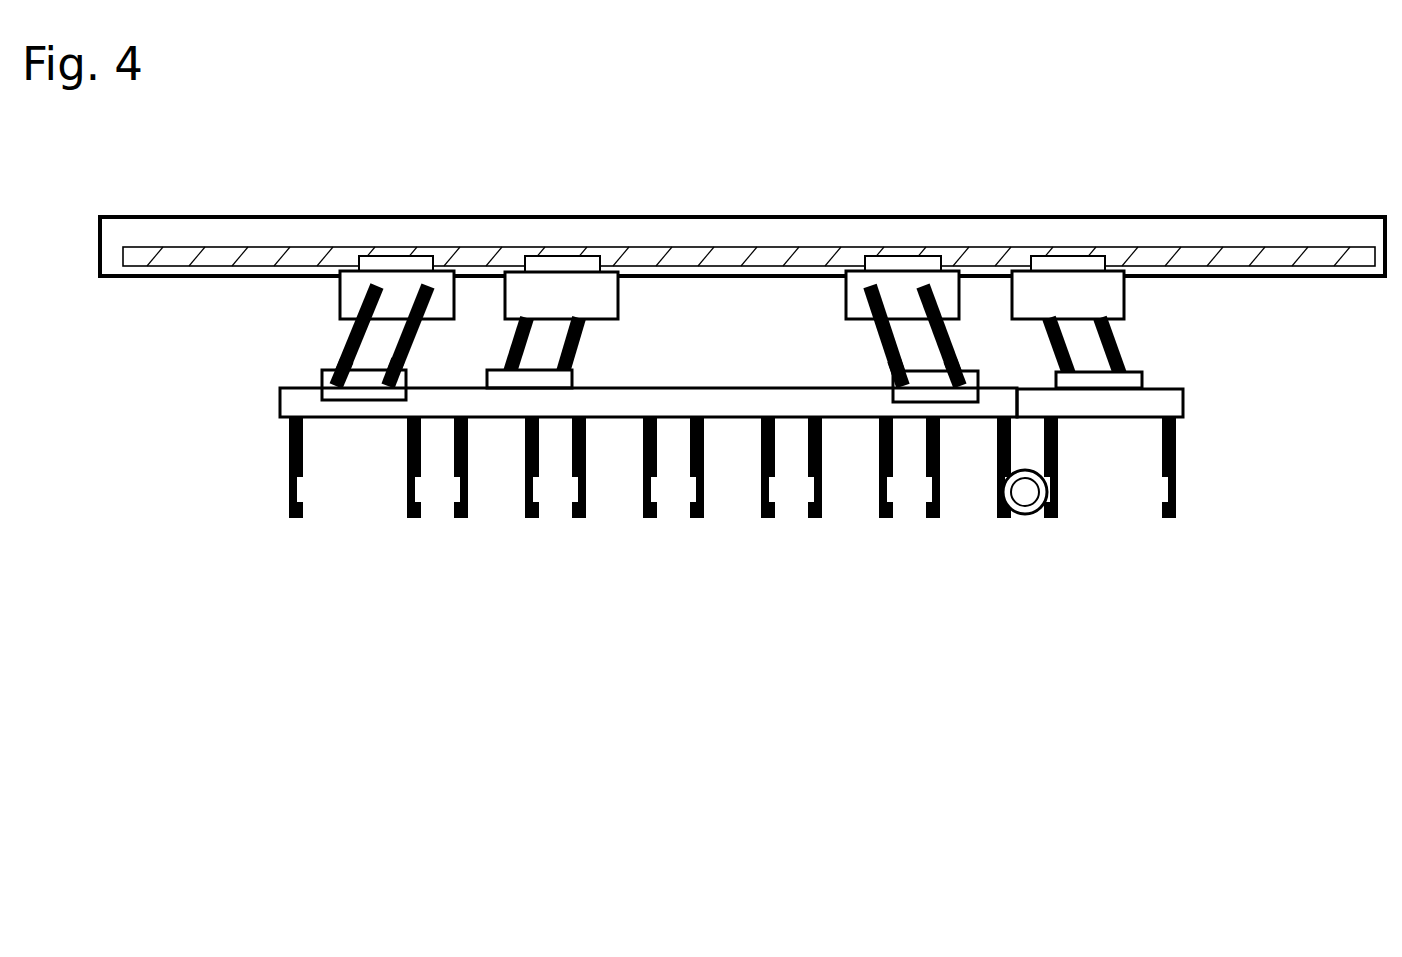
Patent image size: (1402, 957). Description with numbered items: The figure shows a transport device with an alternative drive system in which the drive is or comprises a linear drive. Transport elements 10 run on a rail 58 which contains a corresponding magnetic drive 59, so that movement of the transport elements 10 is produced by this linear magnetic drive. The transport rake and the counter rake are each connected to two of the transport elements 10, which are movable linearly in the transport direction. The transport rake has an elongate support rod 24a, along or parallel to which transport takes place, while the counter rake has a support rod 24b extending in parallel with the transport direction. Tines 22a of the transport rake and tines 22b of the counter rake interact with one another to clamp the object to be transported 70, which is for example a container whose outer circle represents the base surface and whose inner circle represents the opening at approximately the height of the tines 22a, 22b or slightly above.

The rail 58 is at (112, 271).
The magnetic drive 59 is at (251, 253).
The transport element 10 is at (352, 293).
The support rod 24a is at (300, 405).
The support rod 24b is at (1145, 393).
The object to be transported 70 is at (1033, 490).
The tine 22a is at (1000, 517).
The tine 22b is at (1048, 517).